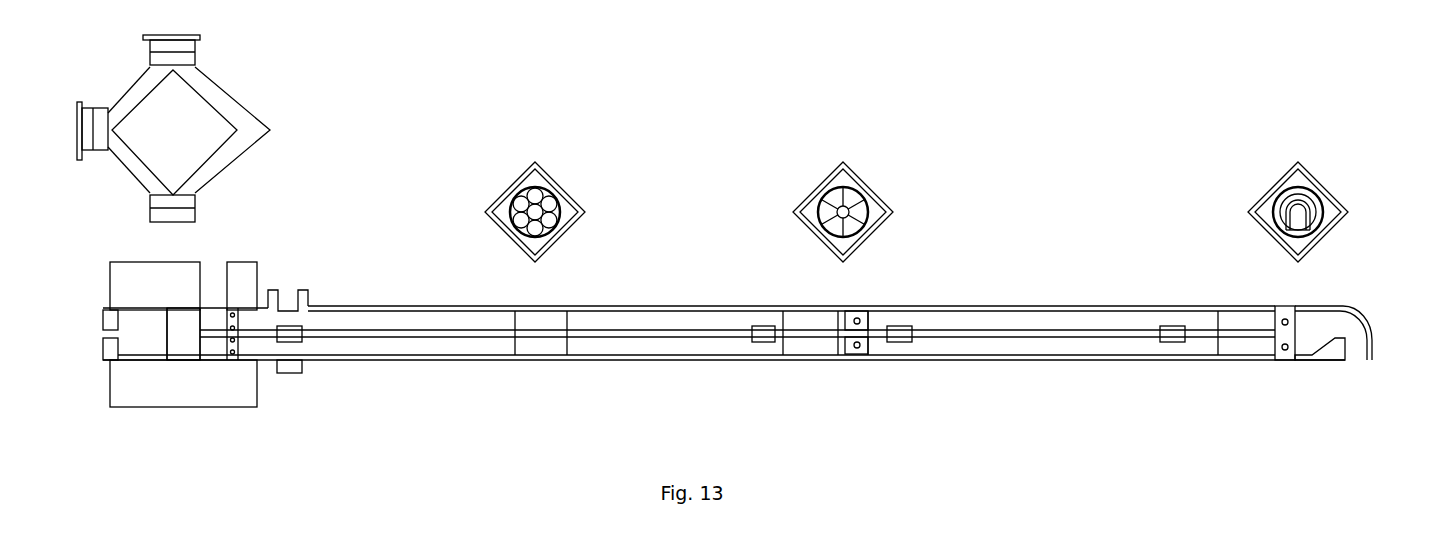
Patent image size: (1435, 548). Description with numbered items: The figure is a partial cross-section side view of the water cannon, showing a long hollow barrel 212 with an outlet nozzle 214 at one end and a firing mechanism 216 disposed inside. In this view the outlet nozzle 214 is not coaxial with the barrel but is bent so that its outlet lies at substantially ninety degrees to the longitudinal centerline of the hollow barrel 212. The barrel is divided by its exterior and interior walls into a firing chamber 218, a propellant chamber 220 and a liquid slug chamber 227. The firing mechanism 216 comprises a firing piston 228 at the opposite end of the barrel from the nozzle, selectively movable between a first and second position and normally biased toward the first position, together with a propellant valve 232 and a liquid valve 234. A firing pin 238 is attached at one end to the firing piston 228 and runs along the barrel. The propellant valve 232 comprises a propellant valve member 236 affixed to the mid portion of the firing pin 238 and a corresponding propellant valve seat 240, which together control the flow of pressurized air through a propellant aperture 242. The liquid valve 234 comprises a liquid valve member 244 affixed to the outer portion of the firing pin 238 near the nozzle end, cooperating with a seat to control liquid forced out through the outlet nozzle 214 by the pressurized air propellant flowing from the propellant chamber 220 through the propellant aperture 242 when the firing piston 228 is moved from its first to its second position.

The hollow barrel 212 is at (1018, 308).
The outlet nozzle 214 is at (1370, 278).
The firing mechanism 216 is at (384, 286).
The firing chamber 218 is at (232, 376).
The propellant chamber 220 is at (430, 367).
The liquid slug chamber 227 is at (973, 374).
The firing piston 228 is at (183, 338).
The propellant valve 232 is at (848, 408).
The liquid valve 234 is at (1259, 393).
The propellant valve member 236 is at (855, 319).
The firing pin 238 is at (677, 330).
The propellant valve seat 240 is at (880, 354).
The propellant aperture 242 is at (890, 300).
The liquid valve member 244 is at (1282, 320).